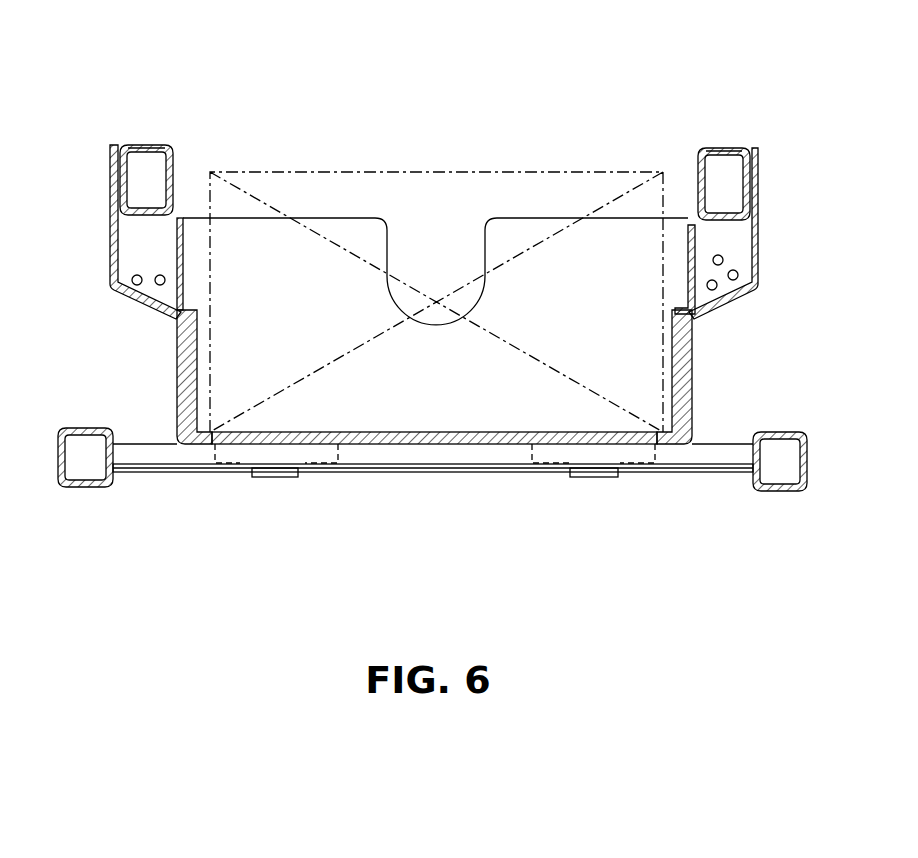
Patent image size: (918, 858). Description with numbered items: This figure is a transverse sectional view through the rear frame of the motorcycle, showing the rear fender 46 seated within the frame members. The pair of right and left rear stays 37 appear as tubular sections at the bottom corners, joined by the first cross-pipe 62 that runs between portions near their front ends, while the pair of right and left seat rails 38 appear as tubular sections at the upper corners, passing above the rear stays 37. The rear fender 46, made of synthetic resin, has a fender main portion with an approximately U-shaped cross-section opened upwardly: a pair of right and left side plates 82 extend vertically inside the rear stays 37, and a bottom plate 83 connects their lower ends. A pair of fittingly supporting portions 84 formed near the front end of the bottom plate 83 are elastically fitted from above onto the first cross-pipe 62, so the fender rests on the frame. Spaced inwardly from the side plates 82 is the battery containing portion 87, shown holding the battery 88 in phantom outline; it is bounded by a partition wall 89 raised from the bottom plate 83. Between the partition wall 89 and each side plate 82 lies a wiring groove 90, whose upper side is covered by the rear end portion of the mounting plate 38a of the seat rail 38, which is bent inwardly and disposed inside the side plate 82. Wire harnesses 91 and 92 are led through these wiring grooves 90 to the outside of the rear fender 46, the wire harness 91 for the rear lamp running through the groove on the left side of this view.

The rear stay 37 is at (90, 487).
The seat rail 38 is at (142, 133).
The mounting plate 38a is at (158, 145).
The rear fender 46 is at (708, 382).
The first cross-pipe 62 is at (502, 464).
The side plate 82 is at (112, 273).
The bottom plate 83 is at (437, 432).
The fittingly supporting portion 84 is at (262, 477).
The battery containing portion 87 is at (375, 394).
The battery 88 is at (430, 172).
The partition wall 89 is at (177, 233).
The wiring groove 90 is at (140, 262).
The wire harness 91 is at (137, 285).
The wire harness 92 is at (740, 275).